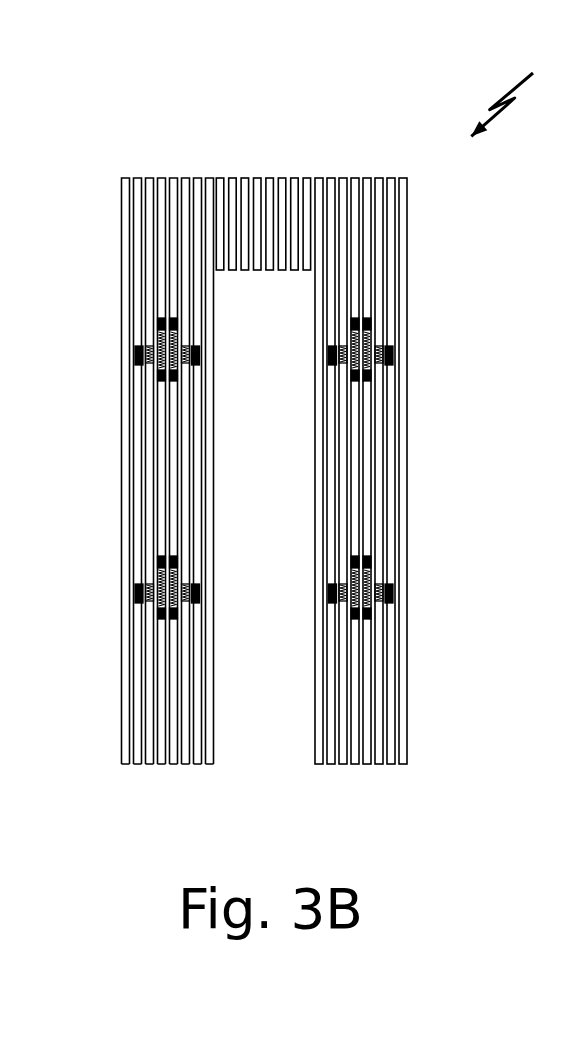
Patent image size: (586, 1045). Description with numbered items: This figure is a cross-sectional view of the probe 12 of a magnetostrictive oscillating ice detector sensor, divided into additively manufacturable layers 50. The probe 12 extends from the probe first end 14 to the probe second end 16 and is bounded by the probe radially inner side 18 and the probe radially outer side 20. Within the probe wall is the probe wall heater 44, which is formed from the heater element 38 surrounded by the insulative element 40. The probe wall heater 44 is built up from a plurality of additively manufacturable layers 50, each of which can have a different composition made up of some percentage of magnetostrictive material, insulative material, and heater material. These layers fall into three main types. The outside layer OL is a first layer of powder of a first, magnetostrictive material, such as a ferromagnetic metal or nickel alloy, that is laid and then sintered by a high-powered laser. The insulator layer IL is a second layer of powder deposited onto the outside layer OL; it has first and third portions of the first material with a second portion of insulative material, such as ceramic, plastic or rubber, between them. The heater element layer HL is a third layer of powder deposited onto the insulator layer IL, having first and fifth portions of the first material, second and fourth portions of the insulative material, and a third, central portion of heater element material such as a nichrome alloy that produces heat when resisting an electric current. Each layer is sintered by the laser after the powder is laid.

The probe 12 is at (113, 290).
The probe first end 14 is at (113, 212).
The probe second end 16 is at (114, 755).
The probe radially inner side 18 is at (206, 522).
The probe radially outer side 20 is at (401, 424).
The heater element 38 is at (149, 355).
The insulative element 40 is at (136, 332).
The probe wall heater 44 is at (523, 90).
The additively manufacturable layers 50 is at (202, 172).
The outside layer OL is at (115, 175).
The insulator layer IL is at (132, 172).
The heater element layer HL is at (138, 172).